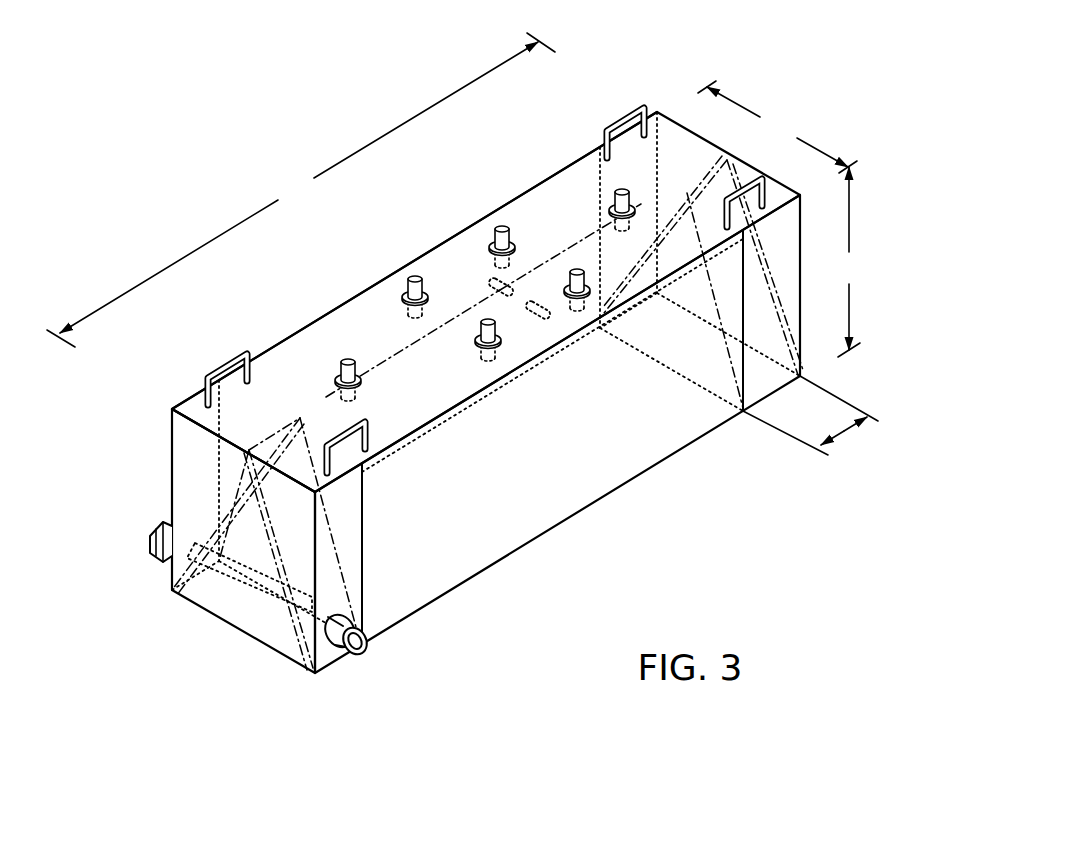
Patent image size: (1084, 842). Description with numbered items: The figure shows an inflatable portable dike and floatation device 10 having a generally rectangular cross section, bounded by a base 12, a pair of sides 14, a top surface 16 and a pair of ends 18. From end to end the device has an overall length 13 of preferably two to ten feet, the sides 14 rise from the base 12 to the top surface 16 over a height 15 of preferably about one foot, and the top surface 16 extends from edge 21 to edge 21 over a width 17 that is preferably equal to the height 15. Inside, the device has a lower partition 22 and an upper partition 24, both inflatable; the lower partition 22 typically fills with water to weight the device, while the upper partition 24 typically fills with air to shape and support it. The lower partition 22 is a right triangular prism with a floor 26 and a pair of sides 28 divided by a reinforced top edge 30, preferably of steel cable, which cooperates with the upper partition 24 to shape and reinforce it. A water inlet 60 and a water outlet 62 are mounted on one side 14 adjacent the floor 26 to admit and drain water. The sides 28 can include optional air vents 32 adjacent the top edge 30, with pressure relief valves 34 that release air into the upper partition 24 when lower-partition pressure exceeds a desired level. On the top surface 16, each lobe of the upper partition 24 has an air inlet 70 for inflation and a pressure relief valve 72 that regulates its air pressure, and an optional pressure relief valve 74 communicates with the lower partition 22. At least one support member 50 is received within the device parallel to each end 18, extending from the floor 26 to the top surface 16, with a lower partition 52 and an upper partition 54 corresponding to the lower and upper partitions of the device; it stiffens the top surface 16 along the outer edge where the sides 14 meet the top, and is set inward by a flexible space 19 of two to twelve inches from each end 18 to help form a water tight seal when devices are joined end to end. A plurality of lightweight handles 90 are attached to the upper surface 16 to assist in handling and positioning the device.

The portable dike and floatation device 10 is at (767, 81).
The base 12 is at (494, 511).
The overall length 13 is at (301, 190).
The sides 14 is at (585, 490).
The height 15 is at (850, 262).
The top surface 16 is at (520, 337).
The width 17 is at (777, 127).
The ends 18 is at (203, 585).
The space 19 is at (847, 428).
The edge 21 is at (478, 390).
The lower partition 22 is at (262, 615).
The upper partition 24 is at (573, 177).
The floor 26 is at (697, 383).
The sides 28 is at (752, 383).
The reinforced top edge 30 is at (400, 355).
The air vents 32 is at (525, 290).
The pressure relief valves 34 is at (492, 284).
The support member 50 is at (732, 321).
The lower partition 52 is at (680, 333).
The upper partition 54 is at (745, 285).
The water inlet 60 is at (148, 560).
The water outlet 62 is at (351, 660).
The air inlet 70 is at (498, 232).
The pressure relief valve 72 is at (410, 286).
The pressure relief valve 74 is at (342, 372).
The handle 90 is at (222, 352).